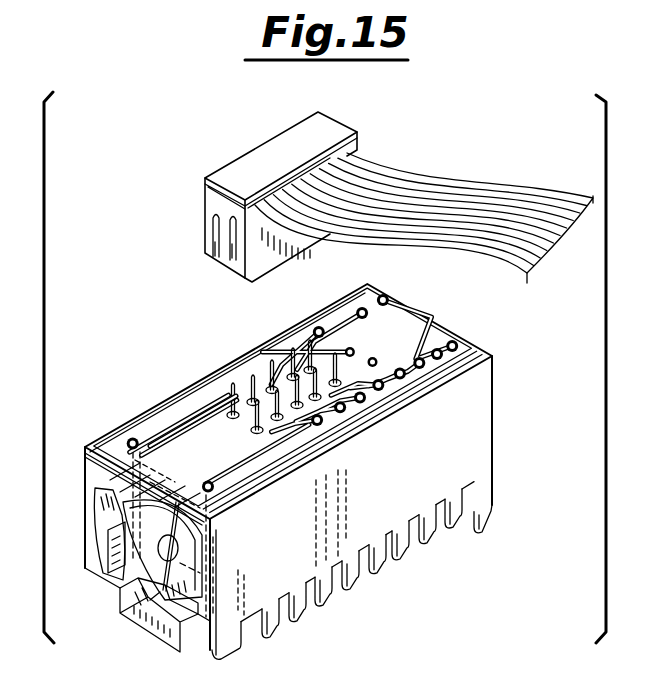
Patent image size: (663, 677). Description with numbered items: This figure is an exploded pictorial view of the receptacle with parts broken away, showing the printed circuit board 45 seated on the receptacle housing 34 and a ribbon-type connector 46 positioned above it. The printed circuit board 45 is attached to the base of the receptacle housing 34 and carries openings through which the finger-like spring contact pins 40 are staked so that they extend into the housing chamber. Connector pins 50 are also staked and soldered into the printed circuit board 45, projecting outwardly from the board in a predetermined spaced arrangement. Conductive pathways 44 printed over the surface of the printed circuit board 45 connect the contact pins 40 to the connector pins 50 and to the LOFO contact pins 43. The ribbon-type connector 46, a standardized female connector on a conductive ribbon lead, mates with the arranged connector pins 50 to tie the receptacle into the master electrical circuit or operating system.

The receptacle housing 34 is at (494, 432).
The contact pins 40 is at (400, 365).
The LOFO contact pins 43 is at (128, 460).
The pathways 44 is at (403, 347).
The printed circuit board 45 is at (470, 348).
The ribbon-type connector 46 is at (258, 150).
The connector pins 50 is at (227, 407).